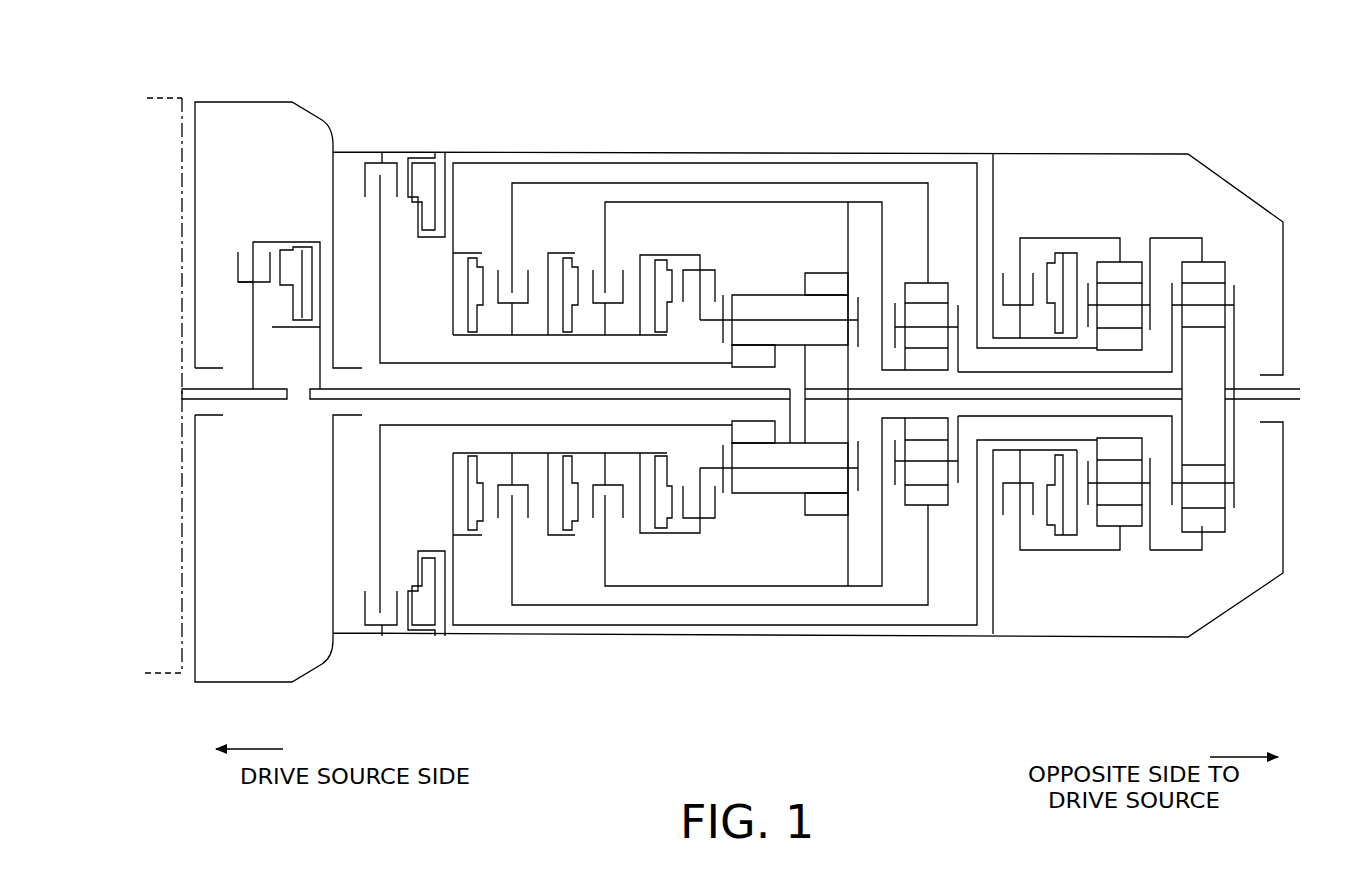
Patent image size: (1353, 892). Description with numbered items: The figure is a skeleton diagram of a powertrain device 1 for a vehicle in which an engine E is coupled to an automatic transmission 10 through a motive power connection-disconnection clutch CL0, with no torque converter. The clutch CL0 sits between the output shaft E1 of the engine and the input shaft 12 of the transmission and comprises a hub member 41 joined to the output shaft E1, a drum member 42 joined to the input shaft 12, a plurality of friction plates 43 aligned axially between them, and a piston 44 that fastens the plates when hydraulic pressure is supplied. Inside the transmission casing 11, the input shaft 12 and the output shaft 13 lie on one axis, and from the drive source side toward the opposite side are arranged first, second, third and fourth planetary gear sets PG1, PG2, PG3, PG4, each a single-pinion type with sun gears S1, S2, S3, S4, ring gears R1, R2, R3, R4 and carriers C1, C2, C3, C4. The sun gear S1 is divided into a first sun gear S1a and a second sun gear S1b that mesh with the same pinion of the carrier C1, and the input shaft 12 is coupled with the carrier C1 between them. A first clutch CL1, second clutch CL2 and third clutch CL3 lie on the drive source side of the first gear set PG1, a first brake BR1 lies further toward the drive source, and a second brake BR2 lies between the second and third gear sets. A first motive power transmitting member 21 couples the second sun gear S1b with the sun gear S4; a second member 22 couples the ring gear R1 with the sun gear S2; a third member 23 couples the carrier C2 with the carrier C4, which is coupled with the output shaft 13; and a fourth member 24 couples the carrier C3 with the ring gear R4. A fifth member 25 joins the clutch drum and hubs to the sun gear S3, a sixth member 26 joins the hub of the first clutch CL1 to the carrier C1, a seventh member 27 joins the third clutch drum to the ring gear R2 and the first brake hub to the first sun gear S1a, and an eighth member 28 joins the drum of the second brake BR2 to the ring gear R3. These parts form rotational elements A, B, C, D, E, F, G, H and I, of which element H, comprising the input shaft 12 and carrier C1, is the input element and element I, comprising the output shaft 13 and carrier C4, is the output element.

The powertrain device for a vehicle 1 is at (1192, 64).
The automatic transmission 10 is at (1240, 134).
The transmission casing 11 is at (844, 152).
The input shaft 12 is at (320, 400).
The output shaft 13 is at (1286, 389).
The first motive power transmitting member 21 is at (975, 402).
The second motive power transmitting member 22 is at (862, 203).
The third motive power transmitting member 23 is at (980, 374).
The fourth motive power transmitting member 24 is at (1177, 238).
The fifth motive power transmitting member 25 is at (777, 165).
The sixth motive power transmitting member 26 is at (725, 183).
The seventh motive power transmitting member 27 is at (383, 323).
The eighth motive power transmitting member 28 is at (1047, 238).
The hub member 41 is at (238, 283).
The drum member 42 is at (262, 240).
The friction plates 43 is at (237, 247).
The piston 44 is at (300, 326).
The engine E is at (178, 88).
The output shaft of the engine E1 is at (247, 400).
The motive power connection-disconnection clutch CL0 is at (259, 272).
The first clutch CL1 is at (713, 261).
The second clutch CL2 is at (603, 261).
The third clutch CL3 is at (506, 257).
The first brake BR1 is at (377, 201).
The second brake BR2 is at (1008, 262).
The first planetary gear set PG1 is at (773, 363).
The second planetary gear set PG2 is at (937, 359).
The third planetary gear set PG3 is at (1129, 381).
The fourth planetary gear set PG4 is at (1214, 372).
The sun gear S1 is at (730, 357).
The first sun gear S1a is at (753, 394).
The second sun gear S1b is at (816, 394).
The ring gear R1 is at (826, 394).
The carrier C1 is at (787, 394).
The sun gear S2 is at (926, 394).
The ring gear R2 is at (926, 394).
The carrier C2 is at (934, 385).
The sun gear S3 is at (1119, 394).
The ring gear R3 is at (1119, 394).
The carrier C3 is at (1148, 230).
The sun gear S4 is at (1203, 395).
The ring gear R4 is at (1203, 397).
The carrier C4 is at (1211, 385).
The first rotational element A is at (679, 371).
The second rotational element B is at (799, 367).
The third rotational element C is at (893, 262).
The fourth rotational element D is at (937, 195).
The sixth rotational element F is at (1094, 221).
The seventh rotational element G is at (1195, 227).
The eighth rotational element H is at (599, 385).
The ninth rotational element I is at (1245, 321).